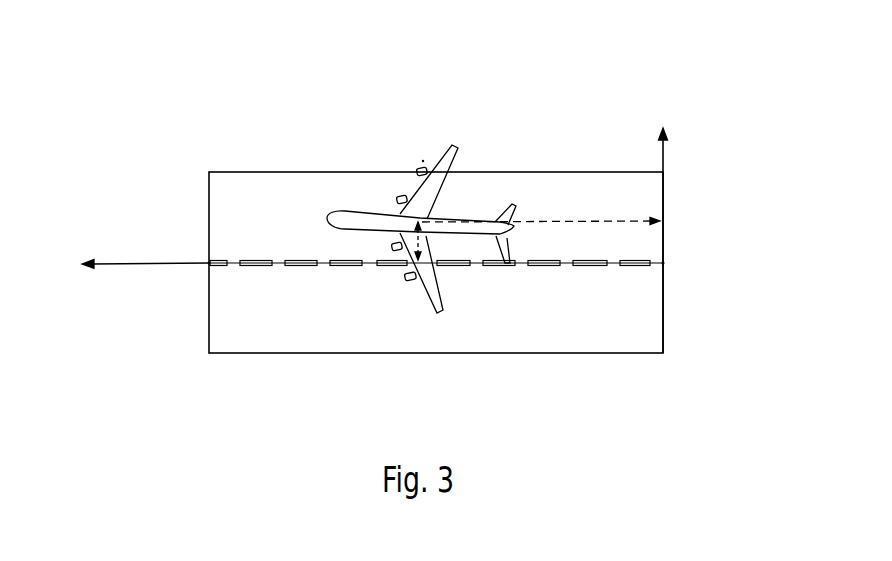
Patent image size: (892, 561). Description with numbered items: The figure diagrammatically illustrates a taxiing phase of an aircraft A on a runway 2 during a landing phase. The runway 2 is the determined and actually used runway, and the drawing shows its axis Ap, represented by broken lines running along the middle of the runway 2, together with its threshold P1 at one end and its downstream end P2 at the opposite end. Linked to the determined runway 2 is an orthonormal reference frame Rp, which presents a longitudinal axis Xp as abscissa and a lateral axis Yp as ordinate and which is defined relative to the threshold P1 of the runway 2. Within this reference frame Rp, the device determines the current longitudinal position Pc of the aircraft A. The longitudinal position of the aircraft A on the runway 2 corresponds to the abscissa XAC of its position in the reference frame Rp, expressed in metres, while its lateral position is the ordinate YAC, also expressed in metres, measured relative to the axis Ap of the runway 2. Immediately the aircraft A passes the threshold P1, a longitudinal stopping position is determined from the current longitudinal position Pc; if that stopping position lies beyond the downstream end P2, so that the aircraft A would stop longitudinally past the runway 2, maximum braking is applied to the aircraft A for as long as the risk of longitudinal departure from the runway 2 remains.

The runway 2 is at (518, 353).
The aircraft A is at (358, 211).
The axis of the runway Ap is at (244, 272).
The reference frame Rp is at (430, 240).
The longitudinal axis Xp is at (145, 248).
The lateral axis Yp is at (674, 255).
The threshold of the runway P1 is at (675, 273).
The downstream end of the runway P2 is at (198, 250).
The current longitudinal position Pc is at (423, 151).
The abscissa of the aircraft position XAC is at (523, 221).
The lateral position of the aircraft YAC is at (413, 245).